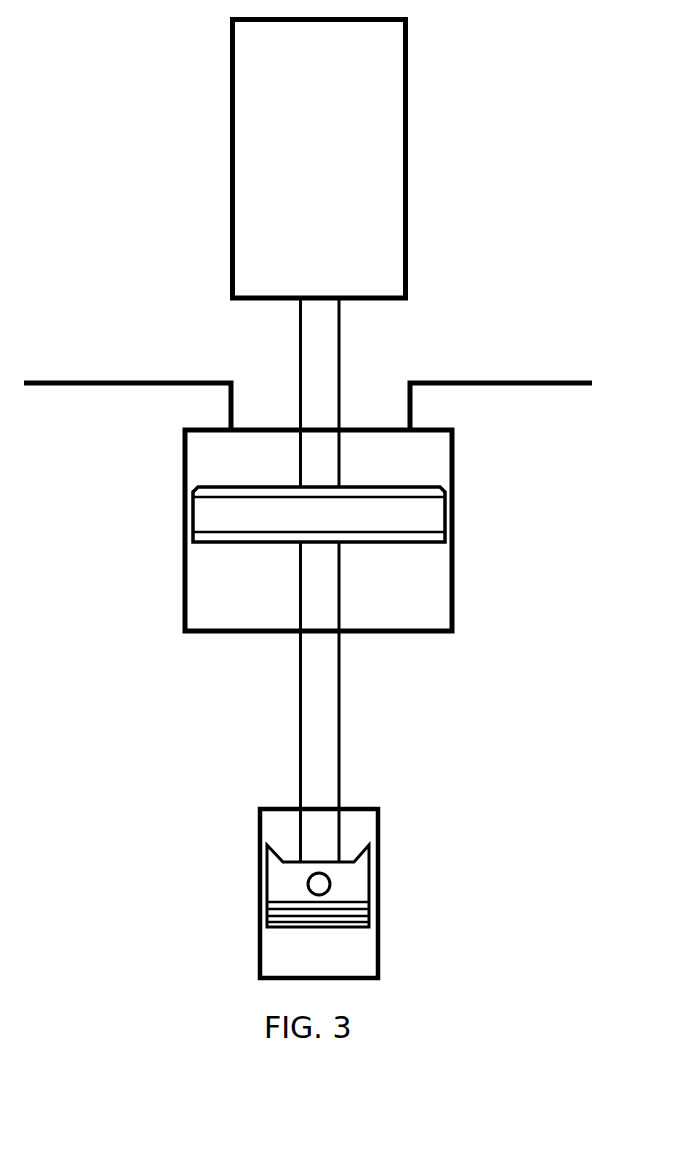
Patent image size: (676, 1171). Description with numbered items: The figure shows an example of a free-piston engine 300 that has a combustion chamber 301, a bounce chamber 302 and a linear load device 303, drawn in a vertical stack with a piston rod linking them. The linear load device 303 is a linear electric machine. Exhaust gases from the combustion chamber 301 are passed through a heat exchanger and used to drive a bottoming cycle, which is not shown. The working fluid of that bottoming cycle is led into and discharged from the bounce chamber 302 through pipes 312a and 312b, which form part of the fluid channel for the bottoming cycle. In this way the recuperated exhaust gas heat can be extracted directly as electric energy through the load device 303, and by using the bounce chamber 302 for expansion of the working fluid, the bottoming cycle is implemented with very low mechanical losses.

The free-piston engine 300 is at (251, 702).
The combustion chamber 301 is at (272, 952).
The bounce chamber 302 is at (205, 450).
The linear load device 303 is at (378, 170).
The pipe 312a is at (144, 380).
The pipe 312b is at (490, 380).